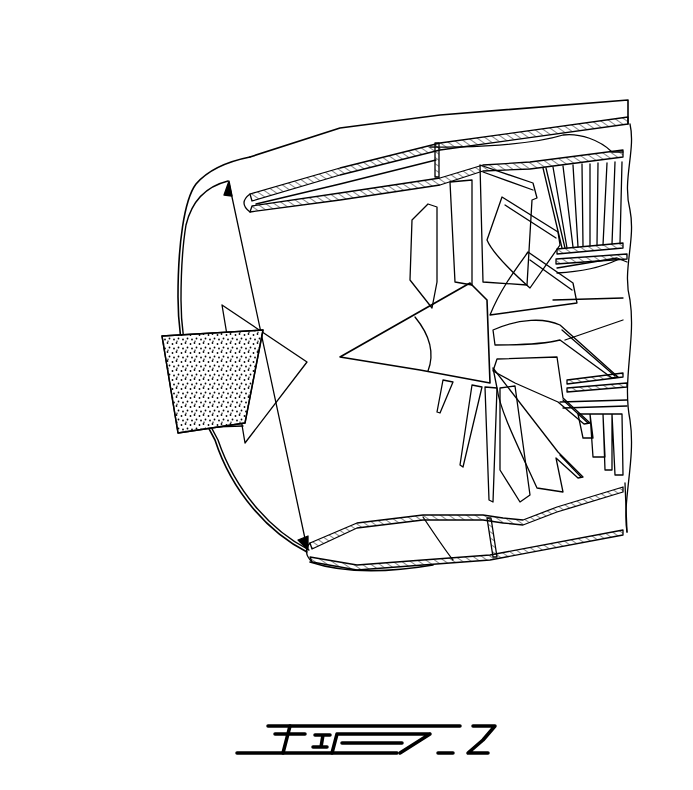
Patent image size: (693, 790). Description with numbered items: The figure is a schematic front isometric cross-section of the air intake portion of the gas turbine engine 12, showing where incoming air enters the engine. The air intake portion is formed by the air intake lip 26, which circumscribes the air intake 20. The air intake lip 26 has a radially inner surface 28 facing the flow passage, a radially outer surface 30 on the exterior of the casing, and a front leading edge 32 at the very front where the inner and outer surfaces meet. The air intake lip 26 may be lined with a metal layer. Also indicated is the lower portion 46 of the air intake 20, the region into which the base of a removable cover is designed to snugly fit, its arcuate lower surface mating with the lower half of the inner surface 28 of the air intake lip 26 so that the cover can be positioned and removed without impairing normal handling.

The gas turbine engine 12 is at (448, 233).
The air intake 20 is at (222, 289).
The air intake lip 26 is at (242, 157).
The radially inner surface 28 is at (330, 434).
The radially outer surface 30 is at (370, 568).
The front leading edge 32 is at (297, 560).
The lower portion of the air intake 46 is at (143, 393).